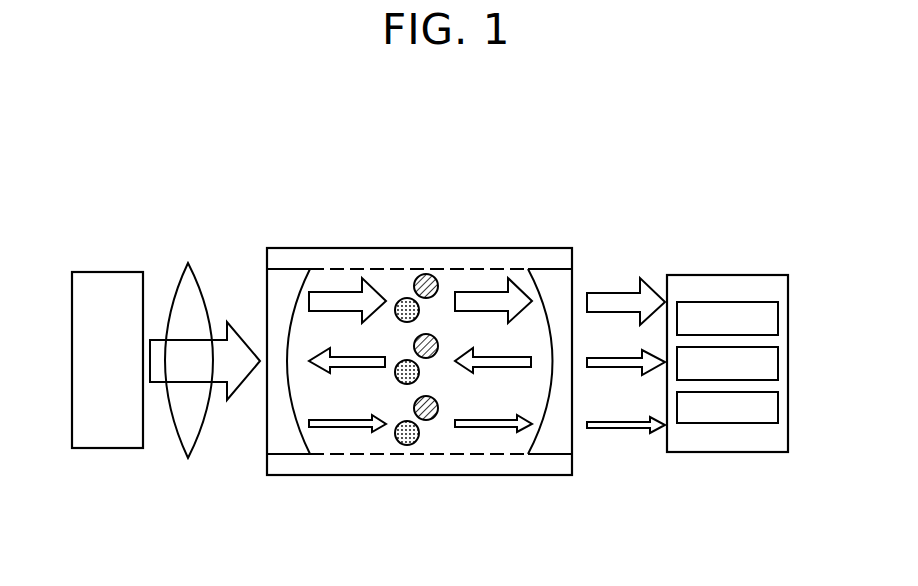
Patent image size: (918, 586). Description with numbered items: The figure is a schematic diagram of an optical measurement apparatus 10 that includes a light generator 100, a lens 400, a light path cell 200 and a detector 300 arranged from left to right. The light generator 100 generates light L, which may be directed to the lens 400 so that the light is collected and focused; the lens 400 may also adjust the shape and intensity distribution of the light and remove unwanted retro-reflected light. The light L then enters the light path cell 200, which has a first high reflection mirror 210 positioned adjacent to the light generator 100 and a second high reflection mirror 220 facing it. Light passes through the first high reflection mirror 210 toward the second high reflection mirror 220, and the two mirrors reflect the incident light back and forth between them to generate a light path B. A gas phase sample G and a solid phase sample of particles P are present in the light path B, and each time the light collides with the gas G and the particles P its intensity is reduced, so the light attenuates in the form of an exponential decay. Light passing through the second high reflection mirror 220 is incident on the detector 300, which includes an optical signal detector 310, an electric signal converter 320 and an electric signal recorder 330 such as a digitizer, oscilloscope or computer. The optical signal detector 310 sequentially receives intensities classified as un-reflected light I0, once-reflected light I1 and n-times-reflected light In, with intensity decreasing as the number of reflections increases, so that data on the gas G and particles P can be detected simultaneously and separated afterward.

The optical measurement apparatus 10 is at (411, 171).
The light generator 100 is at (92, 371).
The lens 400 is at (175, 283).
The light L is at (240, 343).
The light path cell 200 is at (345, 263).
The first high reflection mirror 210 is at (288, 281).
The second high reflection mirror 220 is at (560, 282).
The light path B is at (393, 281).
The gas phase sample G is at (407, 445).
The solid phase sample (particles) P is at (429, 419).
The un-reflected light I0 is at (626, 297).
The once-reflected light I1 is at (626, 354).
The n-times-reflected light In is at (626, 415).
The detector 300 is at (728, 272).
The optical signal detector 310 is at (711, 329).
The electric signal converter 320 is at (711, 374).
The electric signal recorder 330 is at (711, 418).